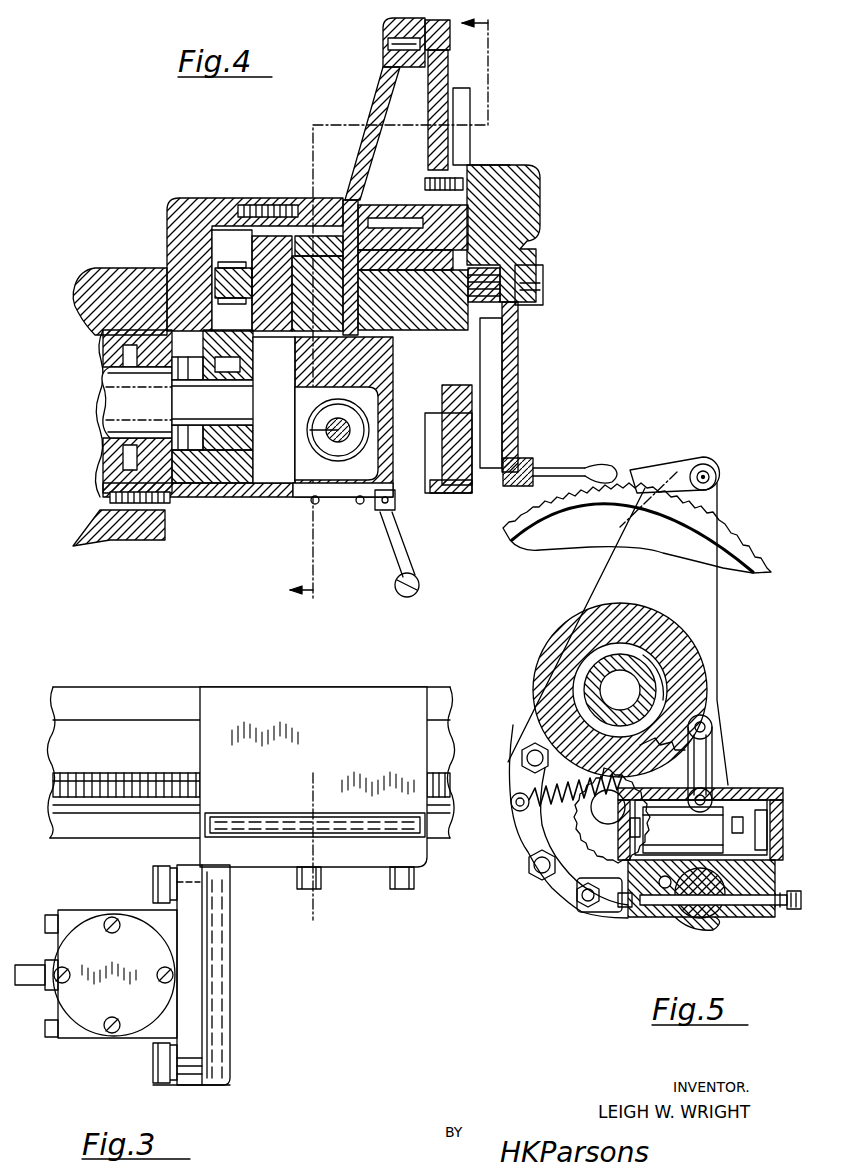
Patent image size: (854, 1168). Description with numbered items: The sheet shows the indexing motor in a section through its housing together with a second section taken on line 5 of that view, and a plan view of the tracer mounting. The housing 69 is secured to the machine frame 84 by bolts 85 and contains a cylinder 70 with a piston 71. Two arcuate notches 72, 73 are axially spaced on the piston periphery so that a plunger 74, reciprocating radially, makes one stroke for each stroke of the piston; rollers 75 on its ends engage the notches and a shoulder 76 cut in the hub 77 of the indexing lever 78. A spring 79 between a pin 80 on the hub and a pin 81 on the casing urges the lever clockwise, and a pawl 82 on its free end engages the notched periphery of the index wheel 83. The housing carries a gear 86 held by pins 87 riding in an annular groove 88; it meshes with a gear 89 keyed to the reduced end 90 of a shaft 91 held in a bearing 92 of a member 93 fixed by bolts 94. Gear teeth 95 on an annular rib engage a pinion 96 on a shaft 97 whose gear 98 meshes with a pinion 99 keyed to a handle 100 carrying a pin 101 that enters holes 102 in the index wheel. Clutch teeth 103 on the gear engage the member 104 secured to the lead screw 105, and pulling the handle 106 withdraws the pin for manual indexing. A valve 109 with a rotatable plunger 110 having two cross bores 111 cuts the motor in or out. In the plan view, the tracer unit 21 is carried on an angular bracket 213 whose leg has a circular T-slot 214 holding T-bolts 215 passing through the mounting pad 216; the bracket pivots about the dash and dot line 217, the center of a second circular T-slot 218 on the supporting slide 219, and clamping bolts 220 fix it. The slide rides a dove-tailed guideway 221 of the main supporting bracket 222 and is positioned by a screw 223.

In FIG. 4, the section line 5— 5 is at (398, 307).
In FIG. 3, the tracer unit 21 is at (92, 1018).
In FIG. 4, the housing 69 is at (240, 508).
In FIG. 5, the housing 69 is at (563, 898).
In FIG. 5, the cylinder 70 is at (762, 788).
In FIG. 5, the piston 71 is at (688, 840).
In FIG. 5, the arcuate notch 72 is at (622, 900).
In FIG. 5, the arcuate notch 73 is at (728, 765).
In FIG. 5, the plunger 74 is at (720, 745).
In FIG. 5, the rollers 75 is at (712, 720).
In FIG. 5, the shoulder 76 is at (715, 686).
In FIG. 4, the hub 77 is at (348, 212).
In FIG. 5, the hub 77 is at (550, 645).
In FIG. 4, the indexing lever 78 is at (383, 100).
In FIG. 5, the indexing lever 78 is at (700, 617).
In FIG. 5, the spring 79 is at (577, 815).
In FIG. 5, the pin 80 is at (566, 887).
In FIG. 5, the pin 81 is at (515, 806).
In FIG. 4, the pawl 82 is at (440, 85).
In FIG. 5, the pawl 82 is at (672, 462).
In FIG. 4, the index wheel 83 is at (460, 137).
In FIG. 5, the index wheel 83 is at (740, 540).
In FIG. 4, the machine frame 84 is at (112, 540).
In FIG. 4, the bolts 85 is at (218, 512).
In FIG. 4, the gear 86 is at (272, 520).
In FIG. 5, the gear 86 is at (608, 825).
In FIG. 4, the pins 87 is at (180, 278).
In FIG. 4, the annular groove 88 is at (240, 510).
In FIG. 4, the gear 89 is at (232, 238).
In FIG. 4, the reduced end 90 is at (205, 280).
In FIG. 4, the shaft 91 is at (480, 268).
In FIG. 4, the bearing 92 is at (262, 260).
In FIG. 4, the member 93 is at (302, 215).
In FIG. 4, the bolts 94 is at (297, 218).
In FIG. 4, the gear teeth 95 is at (378, 387).
In FIG. 4, the pinion 96 is at (392, 206).
In FIG. 4, the shaft 97 is at (450, 233).
In FIG. 4, the gear 98 is at (465, 183).
In FIG. 4, the pinion 99 is at (503, 341).
In FIG. 4, the handle 100 is at (519, 382).
In FIG. 4, the pin 101 is at (488, 466).
In FIG. 4, the holes 102 is at (440, 490).
In FIG. 4, the clutch teeth 103 is at (192, 505).
In FIG. 4, the member 104 is at (178, 500).
In FIG. 4, the lead screw 105 is at (105, 420).
In FIG. 4, the handle 106 is at (592, 466).
In FIG. 5, the valve 109 is at (730, 915).
In FIG. 4, the valve plunger 110 is at (382, 515).
In FIG. 5, the valve plunger 110 is at (678, 905).
In FIG. 4, the cross bores 111 is at (320, 508).
In FIG. 3, the angular bracket 213 is at (243, 860).
In FIG. 3, the circular T-slot 214 is at (222, 892).
In FIG. 3, the T-bolts 215 is at (154, 882).
In FIG. 3, the mounting pad 216 is at (178, 912).
In FIG. 3, the dash and dot line 217 is at (312, 802).
In FIG. 3, the second circular T-slot 218 is at (363, 835).
In FIG. 3, the supporting slide 219 is at (355, 680).
In FIG. 3, the clamping bolts 220 is at (400, 890).
In FIG. 3, the dove-tailed guideway 221 is at (165, 730).
In FIG. 3, the main supporting bracket 222 is at (128, 678).
In FIG. 3, the screw 223 is at (136, 778).